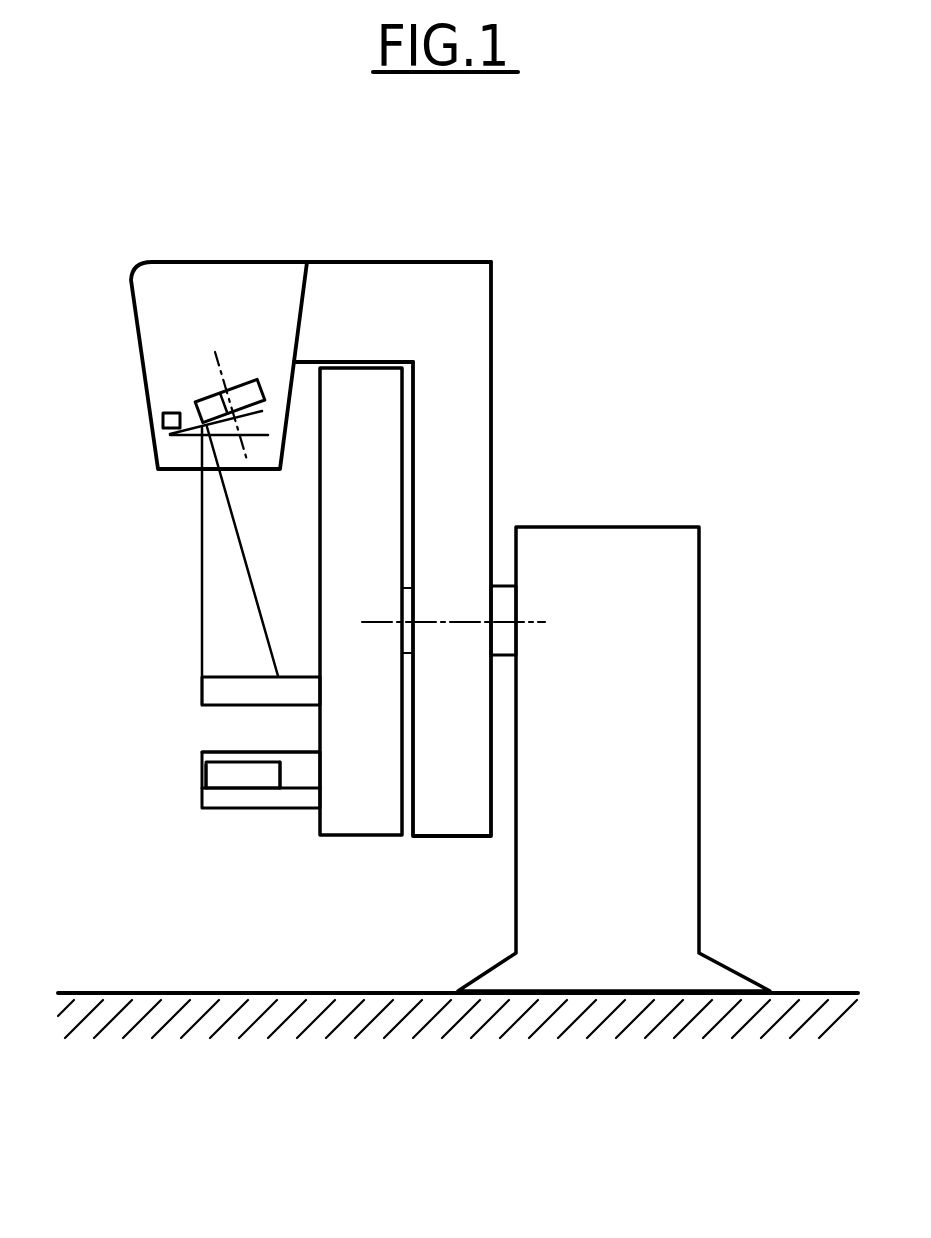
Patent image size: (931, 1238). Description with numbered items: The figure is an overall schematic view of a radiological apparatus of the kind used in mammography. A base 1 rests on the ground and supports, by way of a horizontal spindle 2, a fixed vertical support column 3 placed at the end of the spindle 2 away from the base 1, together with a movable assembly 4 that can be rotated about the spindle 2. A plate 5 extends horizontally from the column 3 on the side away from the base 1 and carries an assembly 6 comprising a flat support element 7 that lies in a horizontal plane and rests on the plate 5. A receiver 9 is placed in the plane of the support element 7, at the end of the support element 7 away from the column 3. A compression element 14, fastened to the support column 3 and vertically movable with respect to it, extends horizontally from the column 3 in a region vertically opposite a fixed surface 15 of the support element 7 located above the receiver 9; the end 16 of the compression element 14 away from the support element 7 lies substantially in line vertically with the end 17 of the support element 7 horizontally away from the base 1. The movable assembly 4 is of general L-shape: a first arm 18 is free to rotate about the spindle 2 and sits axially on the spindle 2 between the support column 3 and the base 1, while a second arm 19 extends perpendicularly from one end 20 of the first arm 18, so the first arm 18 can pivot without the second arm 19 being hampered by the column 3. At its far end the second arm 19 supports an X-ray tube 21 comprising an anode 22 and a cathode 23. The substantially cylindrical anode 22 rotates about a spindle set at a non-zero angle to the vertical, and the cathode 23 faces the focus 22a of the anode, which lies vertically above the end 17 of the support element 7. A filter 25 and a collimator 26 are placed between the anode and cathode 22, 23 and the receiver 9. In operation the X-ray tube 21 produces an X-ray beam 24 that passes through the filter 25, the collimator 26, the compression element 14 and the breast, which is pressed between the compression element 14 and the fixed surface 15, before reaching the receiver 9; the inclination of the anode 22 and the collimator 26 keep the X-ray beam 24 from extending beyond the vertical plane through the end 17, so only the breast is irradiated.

The base 1 is at (642, 698).
The horizontal spindle 2 is at (502, 603).
The fixed vertical support column 3 is at (363, 797).
The movable assembly 4 is at (352, 511).
The plate 5 is at (267, 800).
The assembly 6 is at (219, 808).
The flat support element 7 is at (298, 772).
The receiver 9 is at (233, 777).
The compression element 14 is at (243, 690).
The fixed surface 15 is at (225, 757).
The end of the compression element 16 is at (202, 692).
The end of the support element 17 is at (200, 777).
The first arm 18 is at (475, 432).
The second arm 19 is at (363, 293).
The end of the first arm 20 is at (447, 322).
The X-ray tube 21 is at (203, 293).
The anode 22 is at (212, 397).
The focus of the anode 22a is at (197, 410).
The cathode 23 is at (163, 423).
The X-ray beam 24 is at (200, 527).
The filter 25 is at (272, 413).
The collimator 26 is at (260, 442).